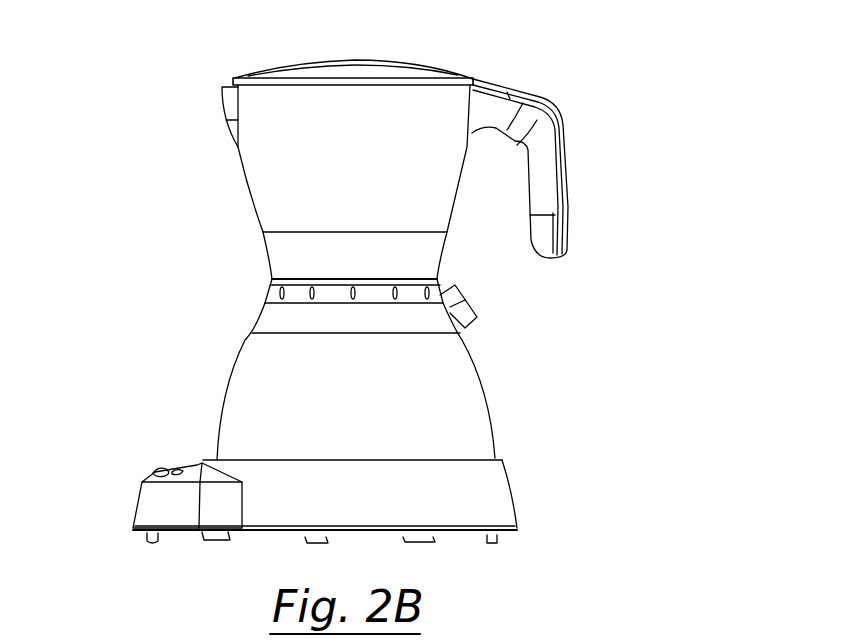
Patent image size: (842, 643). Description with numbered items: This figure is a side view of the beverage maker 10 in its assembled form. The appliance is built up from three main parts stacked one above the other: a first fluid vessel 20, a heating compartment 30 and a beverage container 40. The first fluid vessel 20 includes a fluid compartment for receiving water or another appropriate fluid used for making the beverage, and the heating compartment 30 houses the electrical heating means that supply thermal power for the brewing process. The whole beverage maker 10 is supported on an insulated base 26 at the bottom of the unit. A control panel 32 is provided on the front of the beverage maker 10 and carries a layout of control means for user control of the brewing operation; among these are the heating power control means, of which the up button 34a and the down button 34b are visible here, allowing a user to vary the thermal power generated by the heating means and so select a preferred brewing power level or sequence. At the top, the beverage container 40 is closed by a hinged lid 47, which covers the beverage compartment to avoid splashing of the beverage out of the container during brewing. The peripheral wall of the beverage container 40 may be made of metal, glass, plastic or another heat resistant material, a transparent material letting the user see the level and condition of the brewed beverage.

The beverage maker 10 is at (562, 85).
The first fluid vessel 20 is at (543, 380).
The insulated base 26 is at (498, 532).
The heating compartment 30 is at (543, 483).
The control panel 32 is at (132, 433).
The up button 34a is at (172, 452).
The down button 34b is at (148, 462).
The beverage container 40 is at (165, 195).
The hinged lid 47 is at (437, 73).